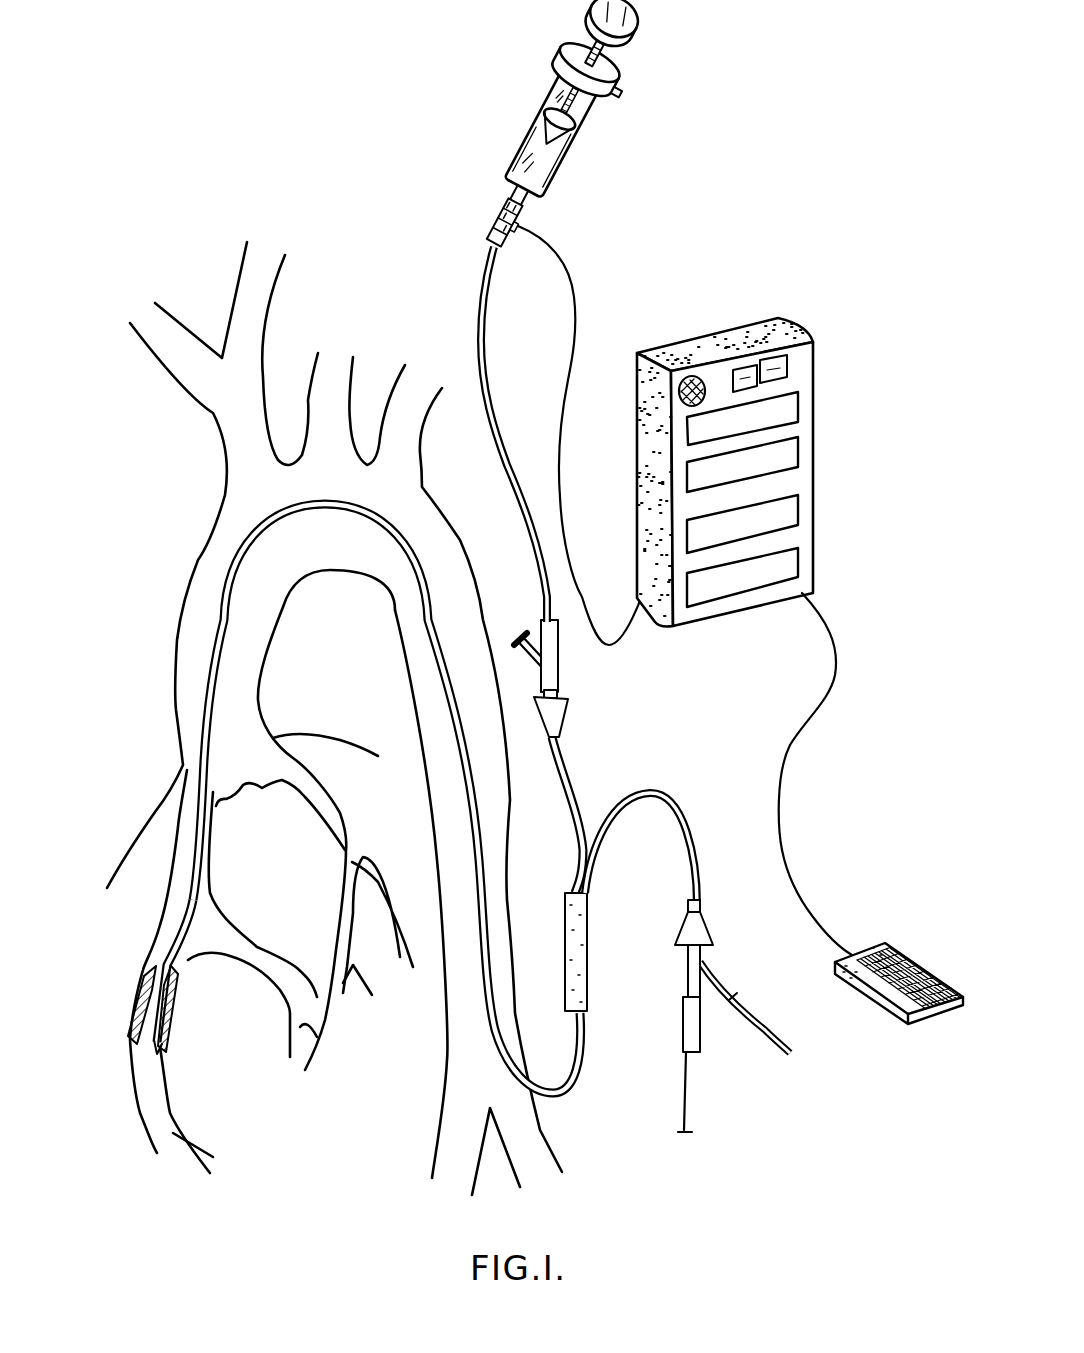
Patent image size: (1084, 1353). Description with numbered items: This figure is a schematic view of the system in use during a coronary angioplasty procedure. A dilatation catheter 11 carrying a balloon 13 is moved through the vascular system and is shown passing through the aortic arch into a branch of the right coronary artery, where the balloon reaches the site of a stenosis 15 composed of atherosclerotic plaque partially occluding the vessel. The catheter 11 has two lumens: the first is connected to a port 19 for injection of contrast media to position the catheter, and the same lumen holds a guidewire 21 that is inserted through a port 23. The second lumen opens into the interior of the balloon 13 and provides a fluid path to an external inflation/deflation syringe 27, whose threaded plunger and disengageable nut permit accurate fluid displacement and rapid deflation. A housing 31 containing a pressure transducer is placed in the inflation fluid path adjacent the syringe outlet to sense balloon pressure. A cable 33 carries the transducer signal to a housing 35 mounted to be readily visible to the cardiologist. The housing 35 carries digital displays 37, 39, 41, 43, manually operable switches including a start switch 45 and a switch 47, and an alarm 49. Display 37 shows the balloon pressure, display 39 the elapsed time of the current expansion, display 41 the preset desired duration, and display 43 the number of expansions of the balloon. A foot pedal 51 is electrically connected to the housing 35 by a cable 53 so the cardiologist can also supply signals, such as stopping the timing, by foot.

The dilatation catheter 11 is at (587, 1043).
The balloon 13 is at (181, 952).
The stenosis 15 is at (134, 997).
The port 19 is at (789, 1058).
The guidewire 21 is at (158, 1050).
The port 23 is at (696, 1055).
The inflation/deflation syringe 27 is at (574, 145).
The housing 31 is at (496, 226).
The cable 33 is at (573, 326).
The housing 35 is at (696, 626).
The display 37 is at (739, 407).
The display 39 is at (799, 452).
The display 41 is at (799, 510).
The display 43 is at (799, 562).
The start switch 45 is at (747, 367).
The switch 47 is at (777, 360).
The alarm 49 is at (696, 370).
The foot pedal 51 is at (900, 967).
The cable 53 is at (800, 729).